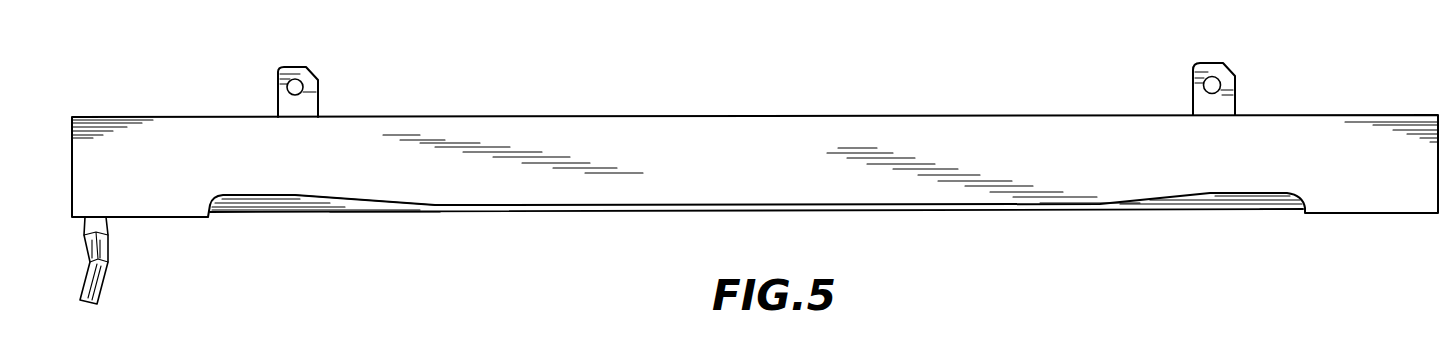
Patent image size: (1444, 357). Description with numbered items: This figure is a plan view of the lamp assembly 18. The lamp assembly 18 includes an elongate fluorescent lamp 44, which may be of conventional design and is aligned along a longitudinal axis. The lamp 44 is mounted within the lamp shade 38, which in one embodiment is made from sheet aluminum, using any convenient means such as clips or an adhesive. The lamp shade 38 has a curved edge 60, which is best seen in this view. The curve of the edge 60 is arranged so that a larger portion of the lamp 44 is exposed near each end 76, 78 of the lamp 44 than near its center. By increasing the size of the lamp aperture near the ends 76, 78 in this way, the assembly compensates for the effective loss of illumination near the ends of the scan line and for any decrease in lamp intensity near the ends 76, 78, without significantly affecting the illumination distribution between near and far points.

The lamp assembly 18 is at (624, 85).
The lamp shade 38 is at (898, 115).
The lamp 44 is at (1270, 222).
The curved edge 60 is at (333, 212).
The end of the lamp 76 is at (270, 212).
The end of the lamp 78 is at (1210, 210).